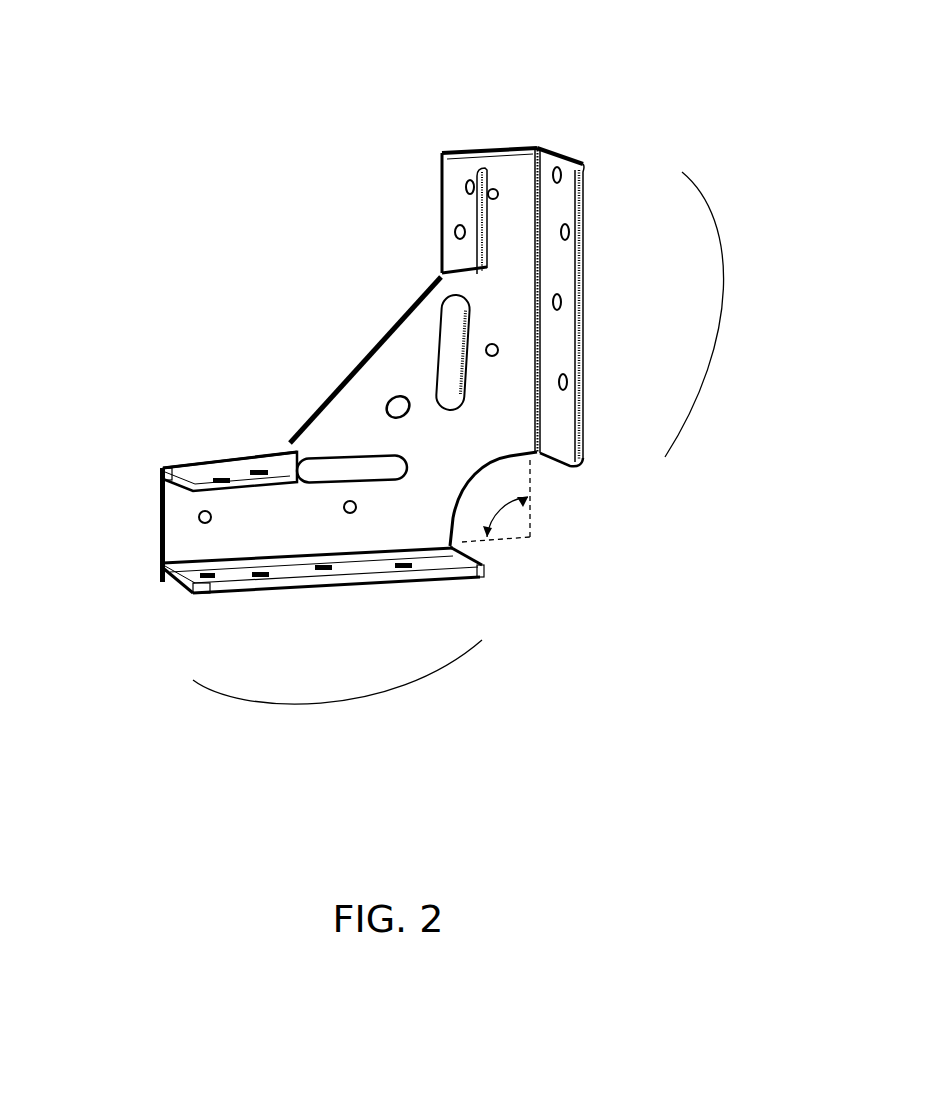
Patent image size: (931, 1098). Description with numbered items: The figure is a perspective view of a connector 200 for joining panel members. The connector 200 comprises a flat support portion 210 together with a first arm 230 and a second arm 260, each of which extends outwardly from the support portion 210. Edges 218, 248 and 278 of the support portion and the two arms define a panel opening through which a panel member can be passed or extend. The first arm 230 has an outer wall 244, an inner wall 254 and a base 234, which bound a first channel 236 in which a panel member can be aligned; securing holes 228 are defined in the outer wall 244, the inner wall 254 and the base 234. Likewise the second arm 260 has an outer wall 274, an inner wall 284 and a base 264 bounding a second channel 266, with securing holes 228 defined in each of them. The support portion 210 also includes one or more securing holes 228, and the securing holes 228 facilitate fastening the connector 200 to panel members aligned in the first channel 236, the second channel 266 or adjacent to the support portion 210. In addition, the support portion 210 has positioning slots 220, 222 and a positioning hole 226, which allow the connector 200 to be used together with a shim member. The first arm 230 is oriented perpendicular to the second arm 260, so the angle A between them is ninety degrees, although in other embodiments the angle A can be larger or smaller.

The connector 200 is at (143, 696).
The support portion 210 is at (325, 425).
The edge 218 is at (468, 497).
The positioning slot 220 is at (435, 268).
The positioning slot 222 is at (355, 443).
The positioning hole 226 is at (393, 397).
The securing holes 228 is at (492, 186).
The first arm 230 is at (728, 292).
The base 234 is at (523, 187).
The first channel 236 is at (510, 185).
The outer wall 244 is at (560, 427).
The edge 248 is at (562, 467).
The inner wall 254 is at (448, 195).
The second arm 260 is at (385, 697).
The base 264 is at (167, 538).
The second channel 266 is at (215, 548).
The outer wall 274 is at (420, 572).
The edge 278 is at (468, 562).
The inner wall 284 is at (222, 484).
The angle A is at (496, 501).